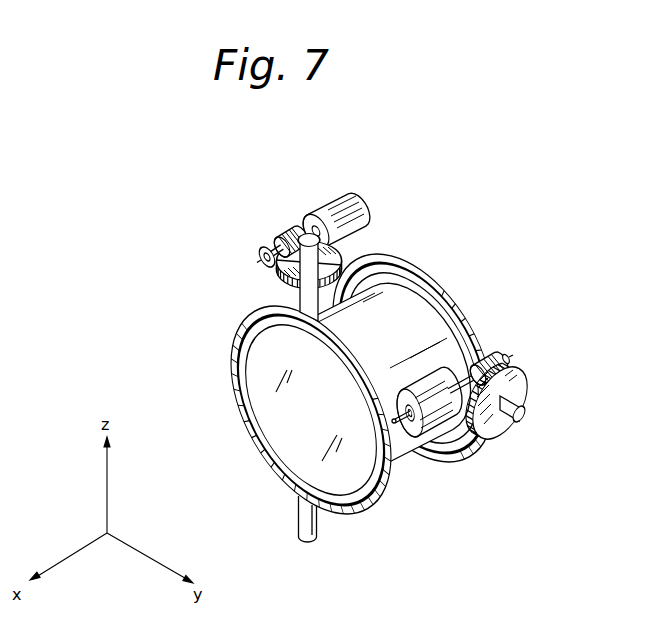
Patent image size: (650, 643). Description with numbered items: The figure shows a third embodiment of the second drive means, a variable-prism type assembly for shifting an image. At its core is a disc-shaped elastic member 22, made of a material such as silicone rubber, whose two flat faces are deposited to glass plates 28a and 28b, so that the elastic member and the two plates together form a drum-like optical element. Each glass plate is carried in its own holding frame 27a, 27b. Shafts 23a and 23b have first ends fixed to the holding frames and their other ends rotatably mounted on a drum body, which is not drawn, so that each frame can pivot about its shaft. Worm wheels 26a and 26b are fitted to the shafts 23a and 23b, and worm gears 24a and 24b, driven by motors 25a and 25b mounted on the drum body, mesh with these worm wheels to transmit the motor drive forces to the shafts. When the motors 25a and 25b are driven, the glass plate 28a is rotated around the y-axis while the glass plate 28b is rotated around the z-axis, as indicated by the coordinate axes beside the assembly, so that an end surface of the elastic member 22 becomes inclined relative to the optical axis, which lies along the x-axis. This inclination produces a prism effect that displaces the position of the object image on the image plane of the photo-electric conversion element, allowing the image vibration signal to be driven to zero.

The elastic member 22 is at (397, 457).
The shaft 23a is at (521, 423).
The shaft 23b is at (352, 246).
The worm gear 24a is at (500, 348).
The worm gear 24b is at (284, 239).
The motor 25a is at (433, 417).
The motor 25b is at (333, 191).
The worm wheel 26a is at (497, 437).
The worm wheel 26b is at (293, 279).
The holding frame 27a is at (437, 280).
The holding frame 27b is at (267, 467).
The glass plate 28a is at (440, 320).
The glass plate 28b is at (241, 421).